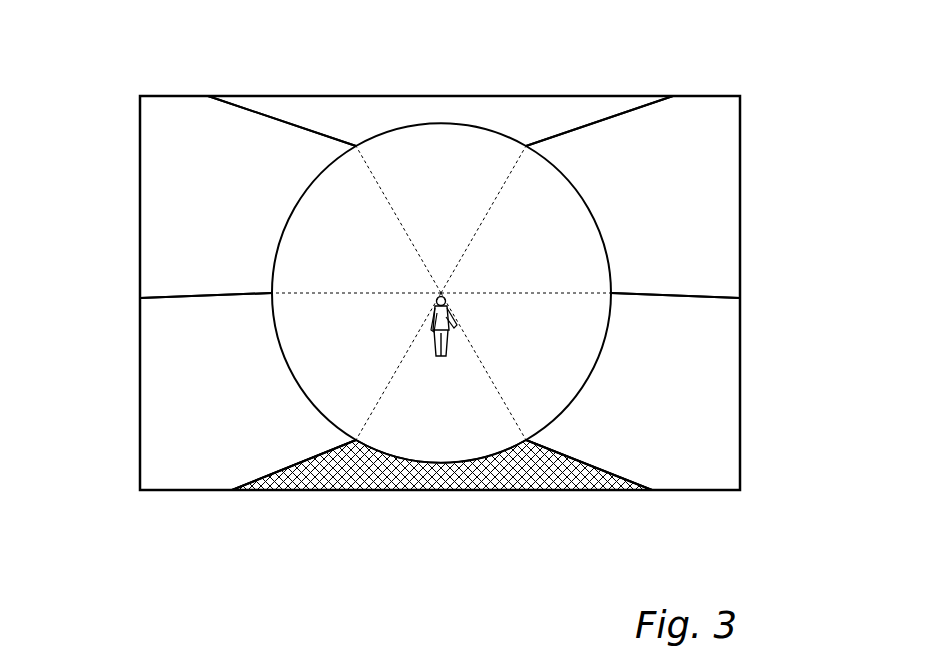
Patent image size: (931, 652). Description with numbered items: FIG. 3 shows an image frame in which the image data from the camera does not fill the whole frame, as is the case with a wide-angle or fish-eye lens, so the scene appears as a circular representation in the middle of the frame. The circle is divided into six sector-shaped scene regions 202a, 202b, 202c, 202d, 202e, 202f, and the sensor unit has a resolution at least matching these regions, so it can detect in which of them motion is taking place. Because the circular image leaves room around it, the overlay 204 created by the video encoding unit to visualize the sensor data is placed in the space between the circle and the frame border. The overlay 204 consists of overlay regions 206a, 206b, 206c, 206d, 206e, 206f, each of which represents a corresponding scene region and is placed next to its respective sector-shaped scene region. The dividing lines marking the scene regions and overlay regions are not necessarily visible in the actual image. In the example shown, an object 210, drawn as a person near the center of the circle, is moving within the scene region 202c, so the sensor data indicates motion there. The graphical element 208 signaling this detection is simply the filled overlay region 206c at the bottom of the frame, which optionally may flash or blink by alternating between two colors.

The scene region 202a is at (315, 233).
The scene region 202b is at (308, 362).
The scene region 202c is at (483, 433).
The scene region 202d is at (592, 340).
The scene region 202e is at (575, 222).
The scene region 202f is at (475, 147).
The overlay 204 is at (272, 492).
The overlay region 206a is at (186, 242).
The overlay region 206b is at (157, 432).
The overlay region 206c is at (352, 475).
The overlay region 206d is at (698, 463).
The overlay region 206e is at (695, 253).
The overlay region 206f is at (332, 120).
The graphical element 208 is at (558, 475).
The object 210 is at (436, 300).